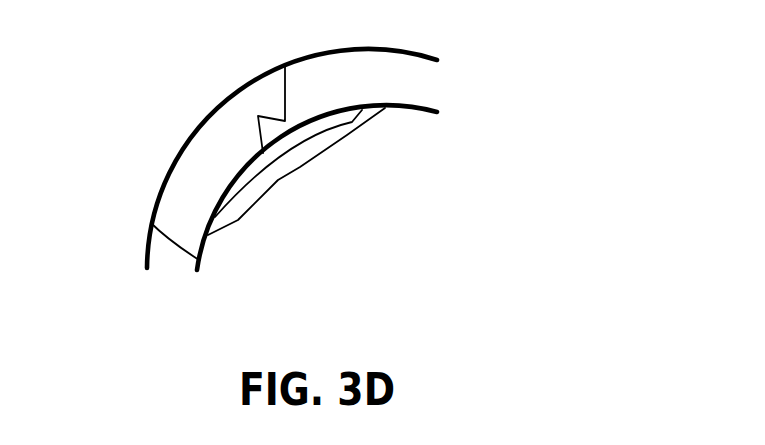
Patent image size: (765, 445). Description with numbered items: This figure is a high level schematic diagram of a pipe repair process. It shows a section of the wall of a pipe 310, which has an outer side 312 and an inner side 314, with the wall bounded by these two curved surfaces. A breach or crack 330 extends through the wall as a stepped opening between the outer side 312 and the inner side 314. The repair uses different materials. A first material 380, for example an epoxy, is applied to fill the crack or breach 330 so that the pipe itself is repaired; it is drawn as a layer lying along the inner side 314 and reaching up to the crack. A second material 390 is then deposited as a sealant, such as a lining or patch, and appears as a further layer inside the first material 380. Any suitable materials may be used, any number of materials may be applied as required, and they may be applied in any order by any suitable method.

The pipe 310 is at (145, 117).
The outer side 312 is at (373, 47).
The inner side 314 is at (151, 223).
The breach or crack 330 is at (284, 77).
The first material 380 is at (354, 123).
The second material 390 is at (300, 168).